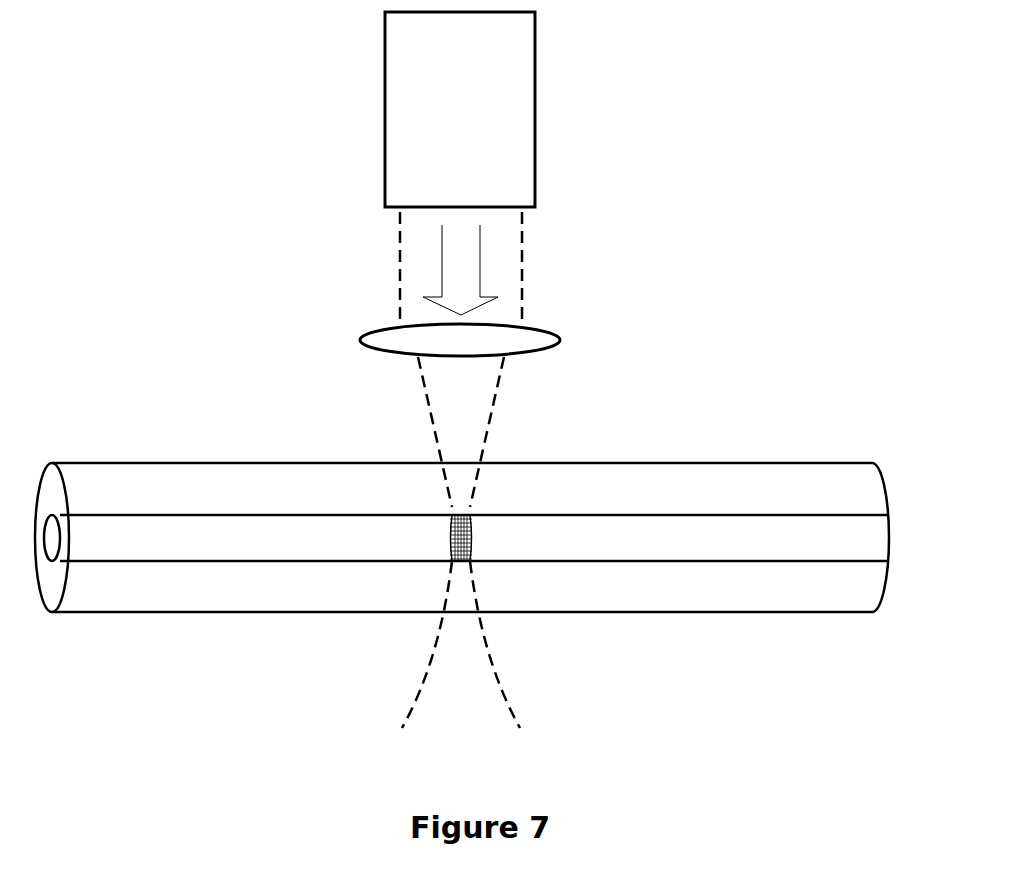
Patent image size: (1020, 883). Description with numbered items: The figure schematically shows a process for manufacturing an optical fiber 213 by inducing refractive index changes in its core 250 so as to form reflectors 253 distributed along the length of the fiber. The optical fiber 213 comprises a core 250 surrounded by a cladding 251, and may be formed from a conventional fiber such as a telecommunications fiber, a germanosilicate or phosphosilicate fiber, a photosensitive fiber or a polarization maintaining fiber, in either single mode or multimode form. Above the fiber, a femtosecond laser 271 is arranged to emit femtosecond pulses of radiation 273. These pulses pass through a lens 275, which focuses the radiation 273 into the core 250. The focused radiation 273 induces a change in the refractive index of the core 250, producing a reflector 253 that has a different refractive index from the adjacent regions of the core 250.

The optical fiber 213 is at (462, 493).
The core 250 is at (545, 514).
The cladding 251 is at (507, 463).
The reflector 253 is at (450, 546).
The femtosecond laser 271 is at (460, 109).
The femtosecond pulses of radiation 273 is at (522, 250).
The lens 275 is at (543, 330).